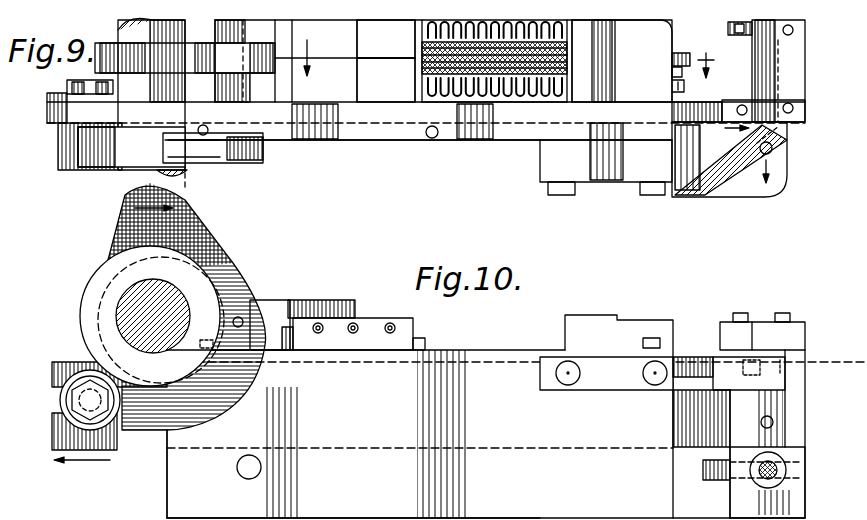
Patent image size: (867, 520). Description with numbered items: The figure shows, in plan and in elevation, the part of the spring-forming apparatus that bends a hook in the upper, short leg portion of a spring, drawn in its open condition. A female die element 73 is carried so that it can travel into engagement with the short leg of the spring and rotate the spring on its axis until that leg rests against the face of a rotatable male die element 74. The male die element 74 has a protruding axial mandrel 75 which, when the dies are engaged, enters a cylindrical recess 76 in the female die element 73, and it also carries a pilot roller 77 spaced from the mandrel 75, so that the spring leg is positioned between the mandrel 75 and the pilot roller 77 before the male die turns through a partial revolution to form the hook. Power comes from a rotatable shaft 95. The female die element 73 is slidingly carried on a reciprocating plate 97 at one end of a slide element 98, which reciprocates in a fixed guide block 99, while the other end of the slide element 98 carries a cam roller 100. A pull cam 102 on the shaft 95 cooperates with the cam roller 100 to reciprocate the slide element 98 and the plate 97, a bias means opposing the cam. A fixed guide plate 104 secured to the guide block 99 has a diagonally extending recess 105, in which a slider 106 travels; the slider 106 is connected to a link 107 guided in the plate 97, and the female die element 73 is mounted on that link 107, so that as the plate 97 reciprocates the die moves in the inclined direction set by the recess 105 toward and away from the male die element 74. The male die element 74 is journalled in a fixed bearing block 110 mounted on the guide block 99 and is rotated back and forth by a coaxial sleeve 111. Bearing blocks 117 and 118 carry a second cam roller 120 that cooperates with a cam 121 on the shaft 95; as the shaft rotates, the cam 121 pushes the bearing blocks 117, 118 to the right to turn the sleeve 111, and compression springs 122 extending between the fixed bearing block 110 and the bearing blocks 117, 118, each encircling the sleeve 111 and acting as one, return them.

In FIG. 9, the female die element 73 is at (741, 38).
In FIG. 9, the male die element 74 is at (679, 52).
In FIG. 9, the mandrel 75 is at (670, 72).
In FIG. 9, the cylindrical recess 76 is at (736, 30).
In FIG. 9, the pilot roller 77 is at (674, 92).
In FIG. 9, the rotatable shaft 95 is at (120, 26).
In FIG. 10, the rotatable shaft 95 is at (127, 314).
In FIG. 9, the reciprocating plate 97 is at (790, 75).
In FIG. 10, the reciprocating plate 97 is at (760, 322).
In FIG. 9, the slide element 98 is at (398, 121).
In FIG. 10, the slide element 98 is at (148, 451).
In FIG. 9, the fixed guide block 99 is at (477, 140).
In FIG. 10, the fixed guide block 99 is at (326, 500).
In FIG. 9, the cam roller 100 is at (62, 150).
In FIG. 10, the cam roller 100 is at (66, 420).
In FIG. 9, the pull cam 102 is at (236, 163).
In FIG. 10, the pull cam 102 is at (232, 402).
In FIG. 9, the fixed guide plate 104 is at (746, 198).
In FIG. 10, the fixed guide plate 104 is at (712, 400).
In FIG. 9, the diagonally extending recess 105 is at (701, 197).
In FIG. 10, the diagonally extending recess 105 is at (703, 380).
In FIG. 9, the slider 106 is at (736, 150).
In FIG. 9, the link 107 is at (717, 134).
In FIG. 9, the fixed bearing block 110 is at (655, 52).
In FIG. 10, the fixed bearing block 110 is at (630, 318).
In FIG. 9, the coaxial sleeve 111 is at (515, 98).
In FIG. 9, the bearing block 117 is at (398, 52).
In FIG. 9, the bearing block 118 is at (398, 92).
In FIG. 10, the bearing block 118 is at (367, 318).
In FIG. 9, the cam roller 120 is at (238, 50).
In FIG. 10, the cam roller 120 is at (250, 302).
In FIG. 9, the cam 121 is at (97, 60).
In FIG. 10, the cam 121 is at (197, 223).
In FIG. 9, the compression springs 122 is at (456, 98).